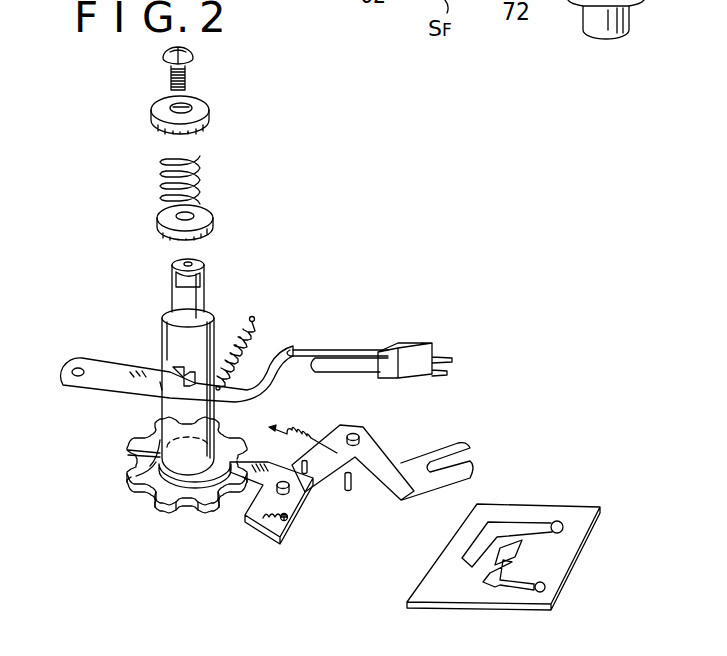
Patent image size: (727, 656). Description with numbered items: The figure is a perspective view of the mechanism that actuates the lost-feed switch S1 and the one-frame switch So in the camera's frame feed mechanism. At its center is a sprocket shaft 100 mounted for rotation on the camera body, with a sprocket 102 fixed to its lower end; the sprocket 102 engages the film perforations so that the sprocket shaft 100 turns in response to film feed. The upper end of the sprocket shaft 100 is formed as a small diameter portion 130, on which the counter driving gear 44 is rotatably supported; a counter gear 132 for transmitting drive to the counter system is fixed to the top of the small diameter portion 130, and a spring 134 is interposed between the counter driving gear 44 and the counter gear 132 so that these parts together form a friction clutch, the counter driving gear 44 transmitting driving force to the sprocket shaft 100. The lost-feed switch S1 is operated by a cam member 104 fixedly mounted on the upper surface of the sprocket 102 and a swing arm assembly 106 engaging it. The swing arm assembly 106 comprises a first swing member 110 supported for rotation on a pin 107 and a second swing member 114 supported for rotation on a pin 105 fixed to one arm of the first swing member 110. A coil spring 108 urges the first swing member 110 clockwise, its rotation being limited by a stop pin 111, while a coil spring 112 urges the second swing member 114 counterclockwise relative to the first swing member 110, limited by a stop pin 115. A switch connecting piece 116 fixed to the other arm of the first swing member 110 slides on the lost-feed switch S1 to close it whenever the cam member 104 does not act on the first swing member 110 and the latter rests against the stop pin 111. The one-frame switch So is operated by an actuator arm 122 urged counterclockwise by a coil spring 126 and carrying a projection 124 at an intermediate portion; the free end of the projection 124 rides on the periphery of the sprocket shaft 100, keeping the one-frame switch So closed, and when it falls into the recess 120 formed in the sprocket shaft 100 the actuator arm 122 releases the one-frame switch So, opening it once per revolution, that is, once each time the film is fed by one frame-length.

The counter gear 132 is at (206, 108).
The spring 134 is at (206, 182).
The counter driving gear 44 is at (200, 218).
The small diameter portion 130 is at (187, 303).
The sprocket shaft 100 is at (174, 338).
The projection 124 is at (190, 362).
The actuator arm 122 is at (110, 390).
The recess 120 is at (166, 372).
The coil spring 126 is at (258, 334).
The one-frame switch So is at (416, 362).
The sprocket 102 is at (150, 468).
The cam member 104 is at (215, 492).
The coil spring 112 is at (262, 532).
The stop pin 115 is at (302, 463).
The pin 105 is at (289, 488).
The second swing member 114 is at (302, 512).
The first swing member 110 is at (398, 442).
The pin 107 is at (366, 412).
The coil spring 108 is at (300, 426).
The stop pin 111 is at (354, 482).
The swing arm assembly 106 is at (333, 495).
The switch connecting piece 116 is at (456, 443).
The lost-feed switch S1 is at (566, 556).